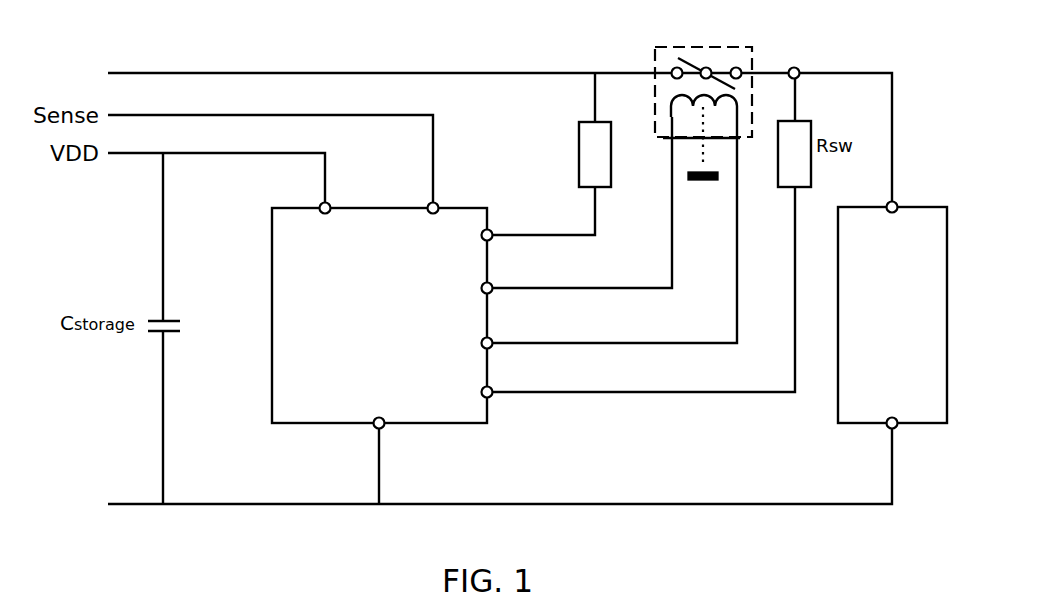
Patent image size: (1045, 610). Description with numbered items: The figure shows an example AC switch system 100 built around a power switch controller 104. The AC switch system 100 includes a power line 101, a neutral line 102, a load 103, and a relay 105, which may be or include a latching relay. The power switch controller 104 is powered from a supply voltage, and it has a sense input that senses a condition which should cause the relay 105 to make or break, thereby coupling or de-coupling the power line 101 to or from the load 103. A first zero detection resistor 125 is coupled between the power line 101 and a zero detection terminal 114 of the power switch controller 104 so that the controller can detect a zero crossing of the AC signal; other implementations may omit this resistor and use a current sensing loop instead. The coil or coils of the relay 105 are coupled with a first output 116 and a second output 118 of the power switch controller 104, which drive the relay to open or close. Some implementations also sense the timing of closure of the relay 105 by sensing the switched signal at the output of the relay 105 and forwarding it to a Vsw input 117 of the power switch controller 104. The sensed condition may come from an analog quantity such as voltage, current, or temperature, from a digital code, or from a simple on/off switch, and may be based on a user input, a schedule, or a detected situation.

The AC switch system 100 is at (137, 35).
The power line 101 is at (168, 72).
The neutral line 102 is at (130, 515).
The load 103 is at (911, 341).
The power switch controller 104 is at (398, 353).
The relay 105 is at (676, 42).
The zero detection terminal 114 is at (543, 240).
The first output 116 is at (543, 298).
The Vsw input 117 is at (543, 400).
The second output 118 is at (543, 352).
The first zero detection resistor 125 is at (617, 153).